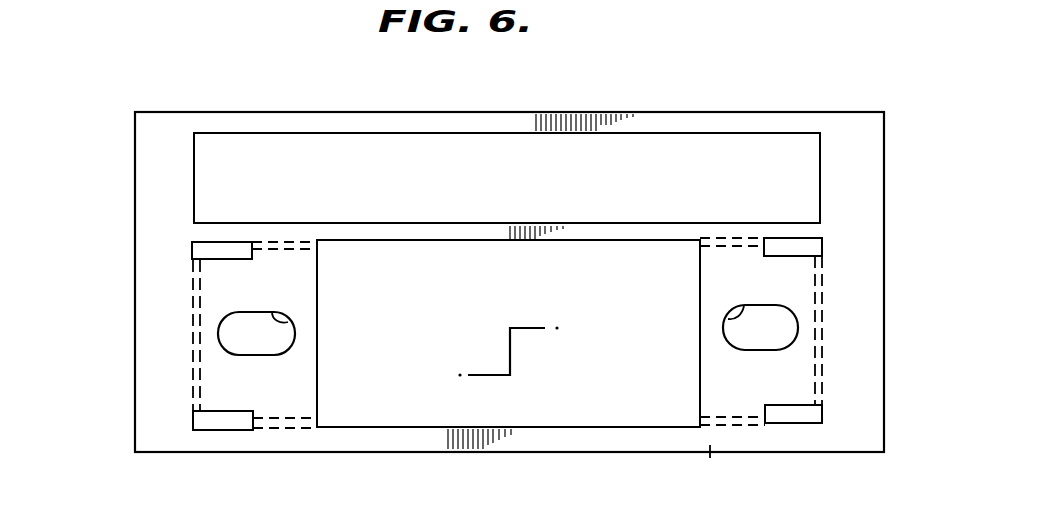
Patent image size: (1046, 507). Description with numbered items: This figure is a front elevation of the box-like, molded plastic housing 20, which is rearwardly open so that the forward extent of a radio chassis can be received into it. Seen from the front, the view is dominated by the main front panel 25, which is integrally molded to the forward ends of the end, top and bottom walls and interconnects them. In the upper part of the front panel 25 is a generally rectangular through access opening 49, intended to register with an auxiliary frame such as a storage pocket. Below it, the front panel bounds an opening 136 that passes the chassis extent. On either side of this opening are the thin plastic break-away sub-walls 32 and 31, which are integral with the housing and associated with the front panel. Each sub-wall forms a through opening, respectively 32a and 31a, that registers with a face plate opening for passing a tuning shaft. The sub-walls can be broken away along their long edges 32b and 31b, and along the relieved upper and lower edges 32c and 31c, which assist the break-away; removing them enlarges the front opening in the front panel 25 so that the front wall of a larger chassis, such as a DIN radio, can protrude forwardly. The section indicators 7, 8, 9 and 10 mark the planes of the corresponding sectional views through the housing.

The housing 20 is at (722, 97).
The through opening 49 is at (520, 135).
The opening 136 is at (508, 333).
The sub-wall 32 is at (224, 302).
The through opening 32a is at (283, 324).
The long edge 32b is at (192, 281).
The relieved edge 32c is at (284, 242).
The sub-wall 31 is at (783, 300).
The through opening 31a is at (728, 332).
The long edge 31b is at (820, 282).
The relieved edge 31c is at (716, 240).
The main front panel 25 is at (709, 448).
The section line 7- 7 is at (957, 71).
The section line 8- 8 is at (20, 105).
The section line 9- 9 is at (108, 48).
The section line 10- 10 is at (92, 377).